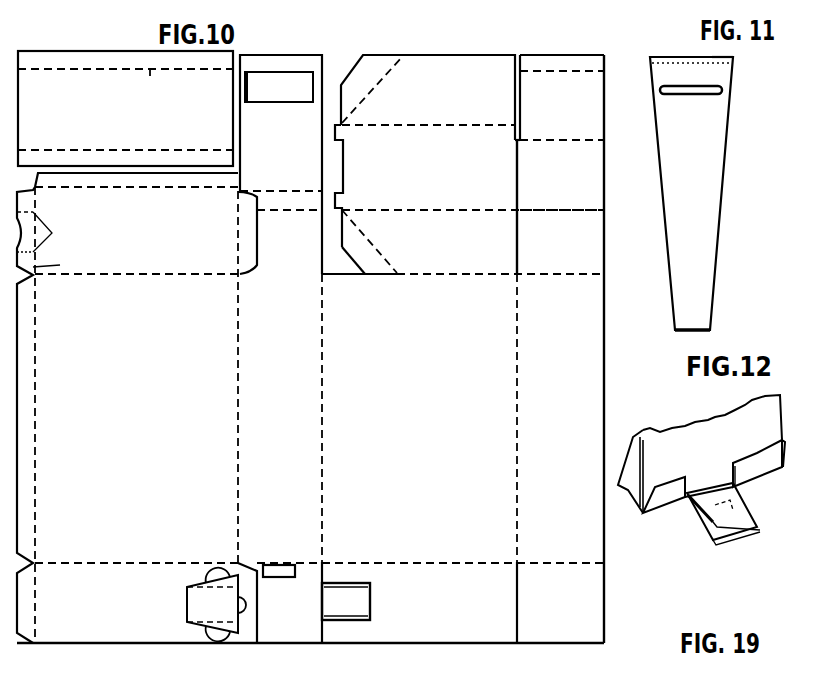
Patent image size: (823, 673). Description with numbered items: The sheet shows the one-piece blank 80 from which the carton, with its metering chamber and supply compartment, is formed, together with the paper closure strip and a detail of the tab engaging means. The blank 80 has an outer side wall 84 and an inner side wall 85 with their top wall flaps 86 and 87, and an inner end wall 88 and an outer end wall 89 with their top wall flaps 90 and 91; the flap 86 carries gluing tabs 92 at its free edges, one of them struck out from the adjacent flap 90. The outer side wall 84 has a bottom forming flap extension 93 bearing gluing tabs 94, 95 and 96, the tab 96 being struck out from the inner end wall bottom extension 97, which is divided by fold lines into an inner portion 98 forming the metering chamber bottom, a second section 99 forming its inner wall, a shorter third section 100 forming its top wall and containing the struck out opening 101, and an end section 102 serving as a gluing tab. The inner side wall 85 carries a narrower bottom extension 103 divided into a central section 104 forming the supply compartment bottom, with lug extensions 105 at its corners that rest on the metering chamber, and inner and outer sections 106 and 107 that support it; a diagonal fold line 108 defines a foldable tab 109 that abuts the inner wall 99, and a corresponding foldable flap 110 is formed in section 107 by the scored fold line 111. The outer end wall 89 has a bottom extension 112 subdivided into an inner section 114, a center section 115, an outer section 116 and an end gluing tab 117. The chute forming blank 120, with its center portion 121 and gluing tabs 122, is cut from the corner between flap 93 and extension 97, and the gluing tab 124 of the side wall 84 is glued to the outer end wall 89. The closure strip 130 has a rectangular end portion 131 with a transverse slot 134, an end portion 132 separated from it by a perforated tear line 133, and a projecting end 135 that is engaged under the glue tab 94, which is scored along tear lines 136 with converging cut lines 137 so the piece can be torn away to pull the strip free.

In FIG. 10, the blank 80 is at (425, 424).
In FIG. 10, the outer side wall 84 is at (310, 493).
In FIG. 10, the inner side wall 85 is at (473, 386).
In FIG. 10, the top wall flap 86 is at (102, 635).
In FIG. 10, the top wall flap 87 is at (457, 635).
In FIG. 10, the inner end wall 88 is at (236, 493).
In FIG. 10, the outer end wall 89 is at (573, 349).
In FIG. 12, the outer end wall 89 is at (715, 417).
In FIG. 10, the top wall flap 90 is at (285, 633).
In FIG. 10, the top wall flap 91 is at (595, 613).
In FIG. 10, the gluing tabs 92 is at (27, 635).
In FIG. 10, the bottom forming flap extension 93 is at (150, 235).
In FIG. 10, the gluing tab 94 is at (33, 267).
In FIG. 12, the gluing tab 94 is at (662, 503).
In FIG. 10, the gluing tab 95 is at (185, 182).
In FIG. 10, the gluing tab 96 is at (242, 222).
In FIG. 10, the inner end wall bottom extension 97 is at (288, 155).
In FIG. 10, the inner portion 98 is at (300, 267).
In FIG. 10, the second section 99 is at (277, 117).
In FIG. 10, the third section 100 is at (315, 80).
In FIG. 10, the struck out opening 101 is at (278, 77).
In FIG. 10, the end section 102 is at (262, 58).
In FIG. 10, the bottom extension 103 is at (457, 156).
In FIG. 10, the central section 104 is at (467, 130).
In FIG. 10, the lug extensions 105 is at (342, 195).
In FIG. 10, the inner section 106 is at (413, 268).
In FIG. 10, the outer section 107 is at (433, 63).
In FIG. 10, the diagonal fold line 108 is at (378, 247).
In FIG. 10, the foldable tab 109 is at (363, 258).
In FIG. 10, the foldable flap 110 is at (375, 65).
In FIG. 10, the scored fold line 111 is at (395, 63).
In FIG. 10, the bottom extension 112 is at (568, 183).
In FIG. 10, the inner section 114 is at (596, 241).
In FIG. 10, the center section 115 is at (596, 176).
In FIG. 10, the outer section 116 is at (597, 110).
In FIG. 10, the end gluing tab 117 is at (542, 37).
In FIG. 10, the chute forming blank 120 is at (125, 113).
In FIG. 10, the chute wall forming center portion 121 is at (150, 76).
In FIG. 10, the gluing tabs 122 is at (78, 52).
In FIG. 10, the gluing tab 124 is at (27, 357).
In FIG. 11, the strip 130 is at (713, 180).
In FIG. 11, the rectangular end portion 131 is at (730, 79).
In FIG. 11, the end portion 132 is at (692, 33).
In FIG. 11, the tear line 133 is at (712, 65).
In FIG. 11, the slot 134 is at (687, 92).
In FIG. 11, the projecting end 135 is at (700, 323).
In FIG. 12, the projecting end 135 is at (728, 497).
In FIG. 10, the tear lines 136 is at (33, 212).
In FIG. 10, the converging cut lines 137 is at (45, 233).